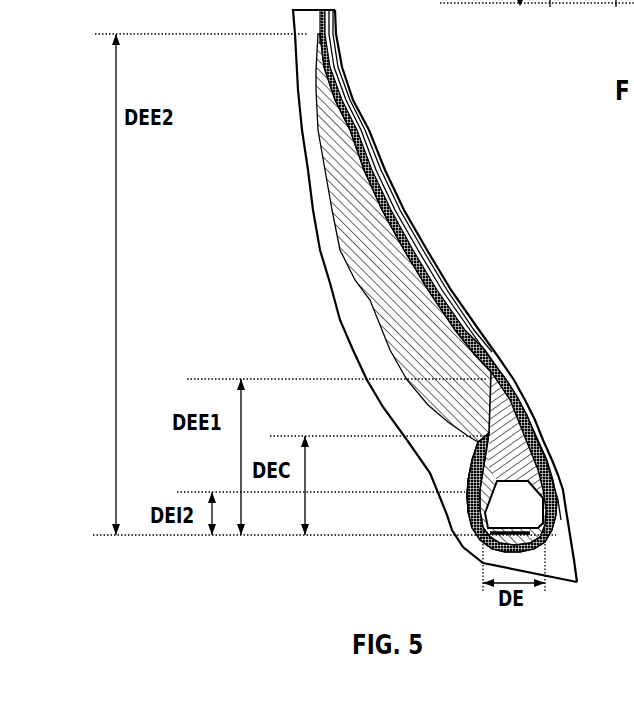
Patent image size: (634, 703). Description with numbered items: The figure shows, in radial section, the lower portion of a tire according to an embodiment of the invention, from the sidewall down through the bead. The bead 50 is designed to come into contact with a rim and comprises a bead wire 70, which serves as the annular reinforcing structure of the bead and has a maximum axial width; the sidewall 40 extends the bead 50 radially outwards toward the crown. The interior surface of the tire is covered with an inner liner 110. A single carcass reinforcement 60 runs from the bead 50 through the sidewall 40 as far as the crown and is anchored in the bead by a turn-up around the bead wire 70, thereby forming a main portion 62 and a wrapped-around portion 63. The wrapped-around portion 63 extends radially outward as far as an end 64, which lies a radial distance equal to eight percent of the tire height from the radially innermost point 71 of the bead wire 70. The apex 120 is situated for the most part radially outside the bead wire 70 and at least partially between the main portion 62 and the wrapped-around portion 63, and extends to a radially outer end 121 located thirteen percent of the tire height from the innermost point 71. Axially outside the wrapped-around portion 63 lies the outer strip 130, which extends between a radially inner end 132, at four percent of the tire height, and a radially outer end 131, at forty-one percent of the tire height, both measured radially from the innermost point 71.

The sidewall 40 is at (308, 135).
The bead 50 is at (452, 517).
The carcass reinforcement 60 is at (352, 128).
The main portion 62 is at (515, 392).
The wrapped-around portion 63 is at (486, 458).
The end of the wrapped-around portion 64 is at (487, 431).
The bead wire 70 is at (513, 505).
The radially innermost point of the bead wire 71 is at (517, 546).
The inner liner 110 is at (394, 197).
The apex 120 is at (515, 443).
The radially outer end of the apex 121 is at (494, 370).
The outer strip 130 is at (368, 227).
The radially outer end of the outer strip 131 is at (316, 31).
The radially inner end of the outer strip 132 is at (465, 490).